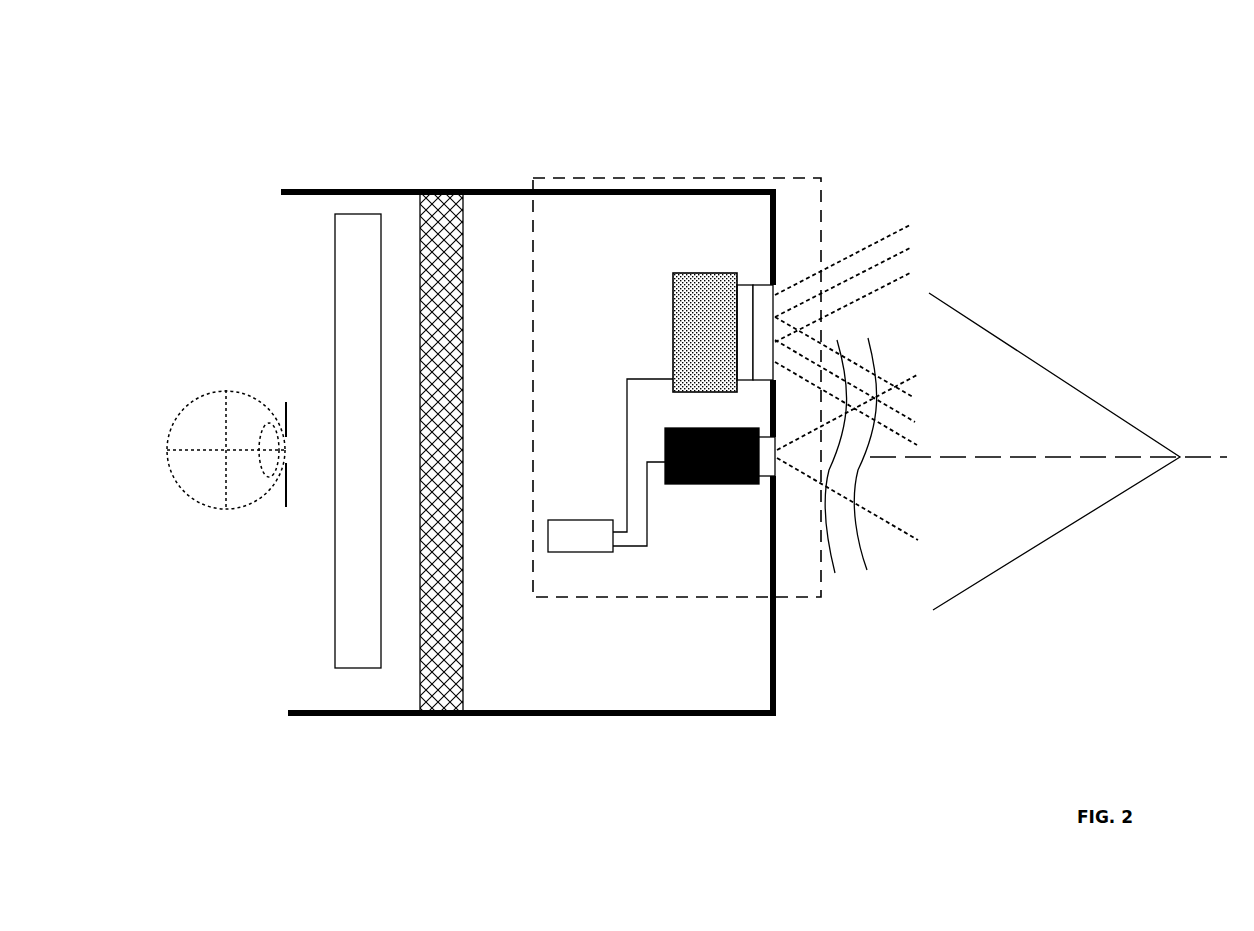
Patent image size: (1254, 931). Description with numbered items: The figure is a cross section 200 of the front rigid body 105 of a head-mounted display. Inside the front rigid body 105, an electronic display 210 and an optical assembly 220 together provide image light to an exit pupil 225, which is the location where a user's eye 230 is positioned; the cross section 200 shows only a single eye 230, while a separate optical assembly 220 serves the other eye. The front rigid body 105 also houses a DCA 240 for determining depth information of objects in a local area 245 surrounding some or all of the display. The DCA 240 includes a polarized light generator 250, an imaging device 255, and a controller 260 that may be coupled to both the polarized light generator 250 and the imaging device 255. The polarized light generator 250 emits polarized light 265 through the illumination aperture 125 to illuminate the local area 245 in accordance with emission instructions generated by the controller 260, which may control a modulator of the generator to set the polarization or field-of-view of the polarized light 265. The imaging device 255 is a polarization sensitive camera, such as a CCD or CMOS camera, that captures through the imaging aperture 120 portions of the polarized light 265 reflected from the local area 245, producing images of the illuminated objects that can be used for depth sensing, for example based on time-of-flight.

The cross section 200 is at (202, 106).
The front rigid body 105 is at (743, 717).
The electronic display 210 is at (418, 237).
The optical assembly 220 is at (372, 668).
The exit pupil 225 is at (285, 402).
The eye 230 is at (193, 498).
The DCA 240 is at (562, 178).
The polarized light generator 250 is at (705, 273).
The illumination aperture 125 is at (774, 285).
The imaging device 255 is at (715, 485).
The imaging aperture 120 is at (777, 470).
The controller 260 is at (557, 555).
The polarized light 265 is at (872, 263).
The local area 245 is at (1053, 525).